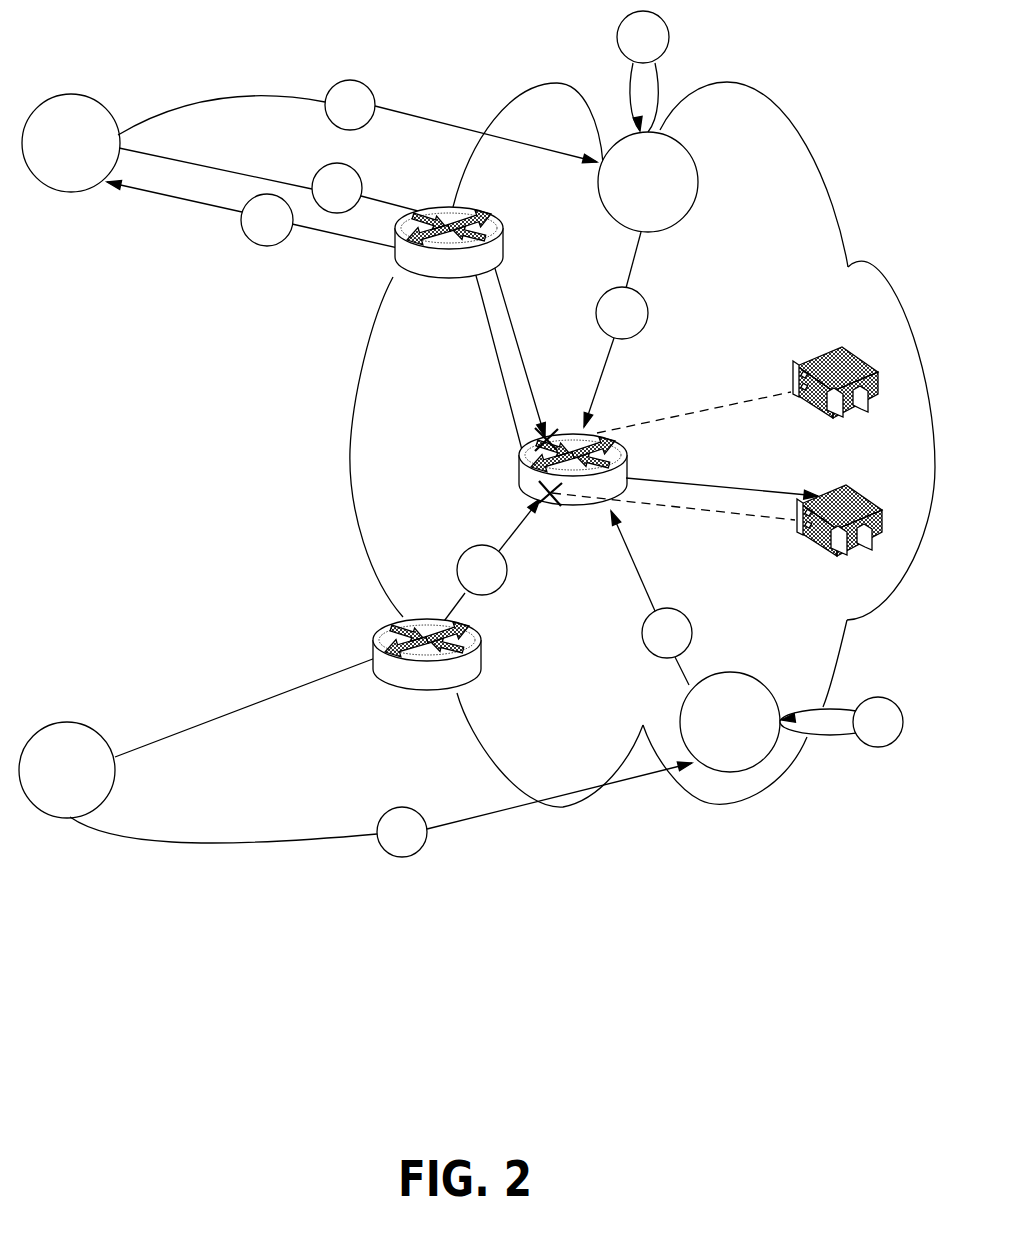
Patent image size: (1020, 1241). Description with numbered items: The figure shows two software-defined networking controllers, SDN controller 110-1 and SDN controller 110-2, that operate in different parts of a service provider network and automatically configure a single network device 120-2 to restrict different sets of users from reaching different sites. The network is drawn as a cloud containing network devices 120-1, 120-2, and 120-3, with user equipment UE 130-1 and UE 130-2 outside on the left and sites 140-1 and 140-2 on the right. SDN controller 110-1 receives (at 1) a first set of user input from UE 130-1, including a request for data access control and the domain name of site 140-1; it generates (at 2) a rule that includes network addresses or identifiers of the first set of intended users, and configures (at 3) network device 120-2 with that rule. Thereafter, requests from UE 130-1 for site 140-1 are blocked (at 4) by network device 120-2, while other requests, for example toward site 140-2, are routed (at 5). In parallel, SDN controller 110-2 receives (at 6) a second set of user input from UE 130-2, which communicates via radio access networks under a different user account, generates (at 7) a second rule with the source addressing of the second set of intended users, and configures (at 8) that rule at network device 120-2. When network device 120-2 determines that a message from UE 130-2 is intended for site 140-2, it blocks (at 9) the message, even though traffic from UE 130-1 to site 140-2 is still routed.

The SDN controller 110-1 is at (648, 182).
The SDN controller 110-2 is at (730, 722).
The network device 120-1 is at (449, 260).
The network device 120-2 is at (573, 485).
The network device 120-3 is at (427, 671).
The UE 130-1 is at (71, 143).
The UE 130-2 is at (67, 770).
The site 140-1 is at (835, 400).
The site 140-2 is at (839, 538).
The receiving first set of user input 1 is at (357, 121).
The generating rule 2 is at (643, 71).
The configuring network device 3 is at (616, 329).
The blocking requests 4 is at (332, 292).
The routing other requests 5 is at (314, 315).
The receiving second set of user input 6 is at (381, 809).
The generating second rule 7 is at (841, 722).
The configuring second rule 8 is at (651, 598).
The blocking request 9 is at (485, 569).